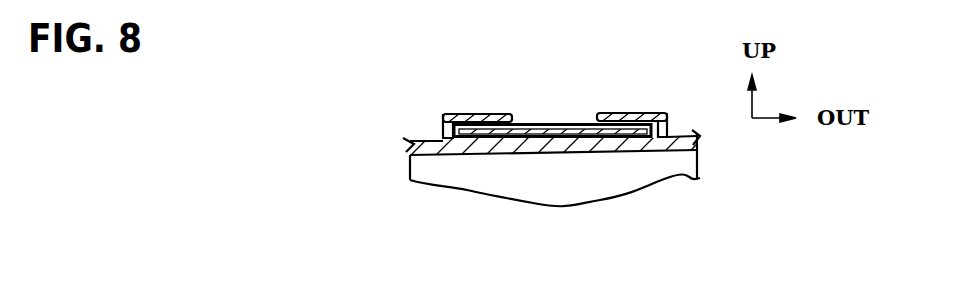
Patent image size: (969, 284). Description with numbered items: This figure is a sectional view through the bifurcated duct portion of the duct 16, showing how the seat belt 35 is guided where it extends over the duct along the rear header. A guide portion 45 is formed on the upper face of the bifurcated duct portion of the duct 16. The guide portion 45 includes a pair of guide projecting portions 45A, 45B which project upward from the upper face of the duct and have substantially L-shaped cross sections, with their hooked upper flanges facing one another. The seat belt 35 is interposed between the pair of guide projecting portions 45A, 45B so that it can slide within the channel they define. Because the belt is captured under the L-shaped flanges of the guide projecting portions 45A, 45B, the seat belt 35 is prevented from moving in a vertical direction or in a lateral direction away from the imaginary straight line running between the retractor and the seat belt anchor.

The duct 16 is at (420, 141).
The guide portion 45 is at (633, 50).
The guide projecting portion 45A is at (488, 113).
The guide projecting portion 45B is at (620, 113).
The seat belt 35 is at (560, 133).